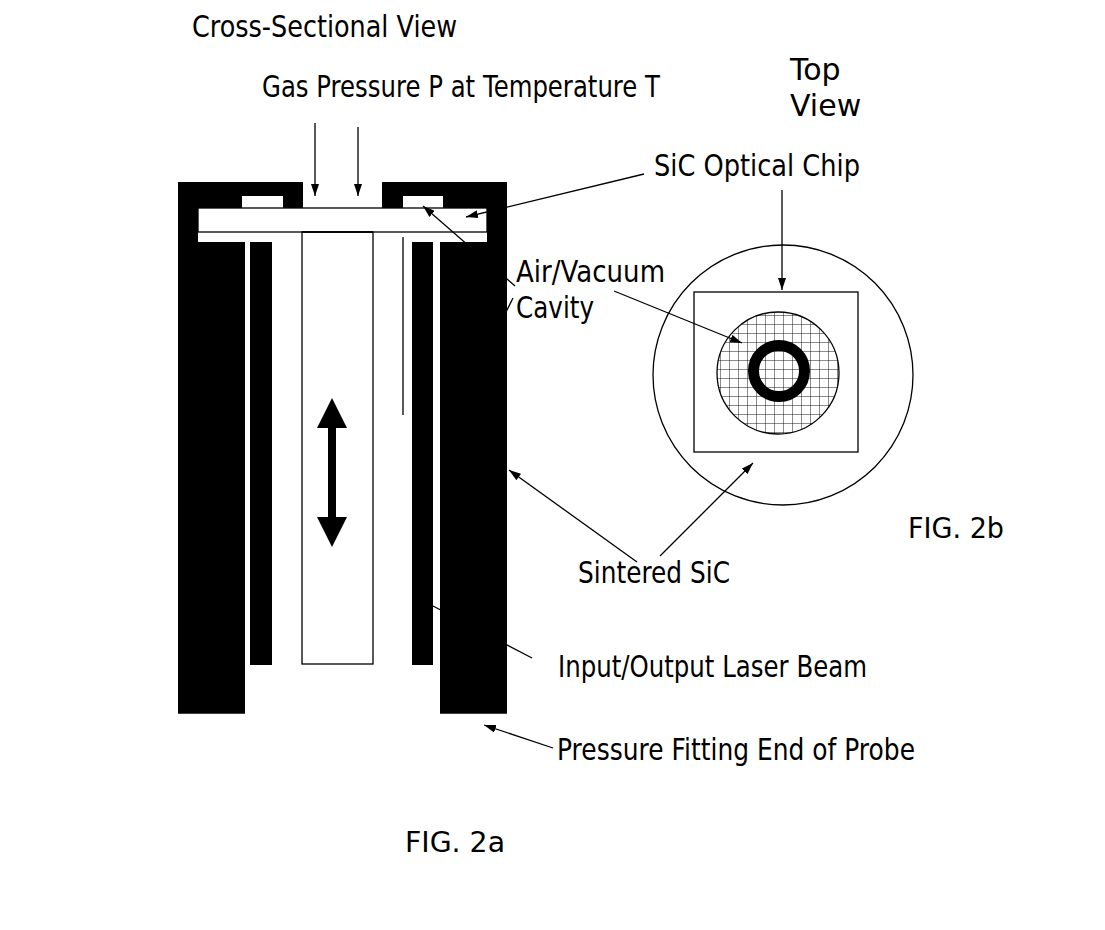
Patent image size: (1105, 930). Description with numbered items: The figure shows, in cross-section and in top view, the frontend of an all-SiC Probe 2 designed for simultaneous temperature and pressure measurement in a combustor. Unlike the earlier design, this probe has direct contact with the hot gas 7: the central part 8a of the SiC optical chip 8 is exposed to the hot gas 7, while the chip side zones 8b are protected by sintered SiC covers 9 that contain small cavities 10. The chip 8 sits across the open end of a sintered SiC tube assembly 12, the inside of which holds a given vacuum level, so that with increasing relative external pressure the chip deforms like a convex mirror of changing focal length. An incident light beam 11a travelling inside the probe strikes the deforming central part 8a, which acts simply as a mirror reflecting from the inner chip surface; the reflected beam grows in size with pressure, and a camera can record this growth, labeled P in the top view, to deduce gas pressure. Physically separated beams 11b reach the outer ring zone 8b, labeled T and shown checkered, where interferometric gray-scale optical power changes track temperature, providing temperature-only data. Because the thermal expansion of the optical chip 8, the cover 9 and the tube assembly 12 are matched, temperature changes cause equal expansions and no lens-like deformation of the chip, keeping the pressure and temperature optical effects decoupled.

In FIG. 2a, the Probe 2 is at (457, 713).
In FIG. 2a, the hot gas 7 is at (333, 136).
In FIG. 2a, the SiC optical chip 8 is at (217, 222).
In FIG. 2b, the SiC optical chip 8 is at (822, 306).
In FIG. 2a, the central part of the SiC optical chip 8a is at (327, 226).
In FIG. 2b, the central part of the SiC optical chip 8a is at (812, 382).
In FIG. 2a, the chip side zones 8b is at (278, 220).
In FIG. 2b, the chip side zones 8b is at (822, 350).
In FIG. 2a, the sintered SiC cover 9 is at (417, 185).
In FIG. 2b, the sintered SiC cover 9 is at (878, 312).
In FIG. 2a, the small cavity 10 is at (263, 203).
In FIG. 2a, the incident light beam 11a is at (323, 664).
In FIG. 2a, the physically separated beams 11b is at (260, 665).
In FIG. 2a, the tube assembly 12 is at (180, 278).